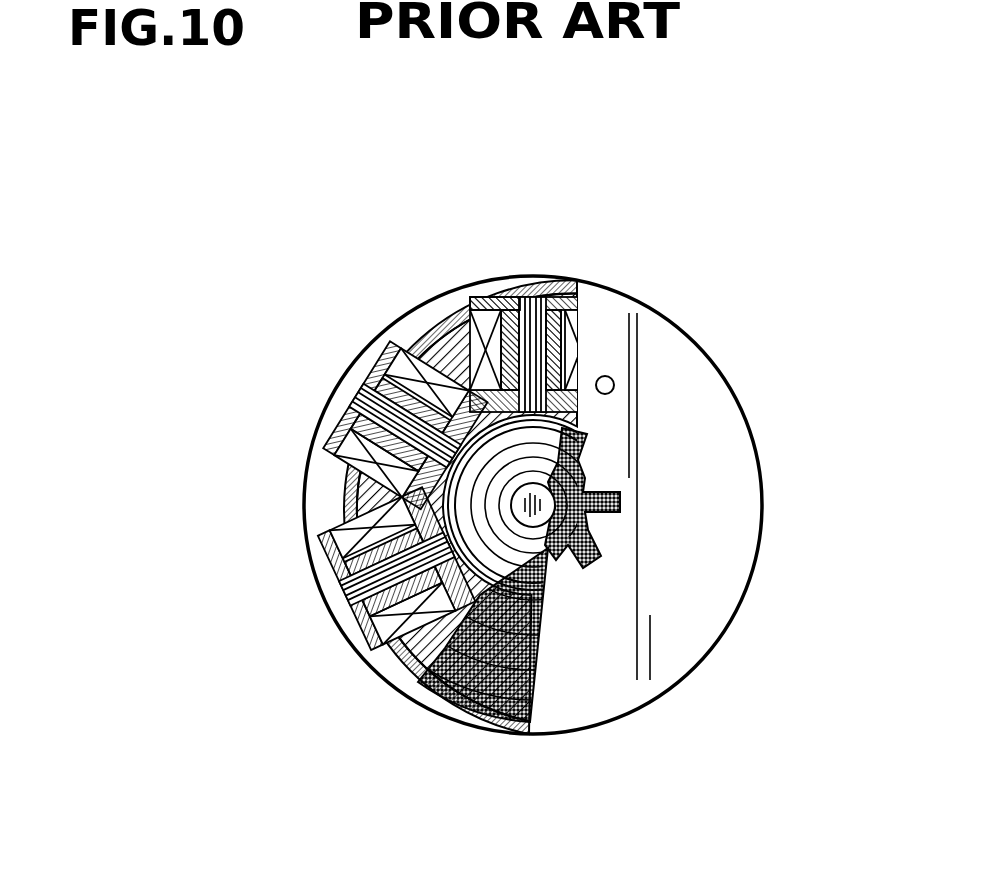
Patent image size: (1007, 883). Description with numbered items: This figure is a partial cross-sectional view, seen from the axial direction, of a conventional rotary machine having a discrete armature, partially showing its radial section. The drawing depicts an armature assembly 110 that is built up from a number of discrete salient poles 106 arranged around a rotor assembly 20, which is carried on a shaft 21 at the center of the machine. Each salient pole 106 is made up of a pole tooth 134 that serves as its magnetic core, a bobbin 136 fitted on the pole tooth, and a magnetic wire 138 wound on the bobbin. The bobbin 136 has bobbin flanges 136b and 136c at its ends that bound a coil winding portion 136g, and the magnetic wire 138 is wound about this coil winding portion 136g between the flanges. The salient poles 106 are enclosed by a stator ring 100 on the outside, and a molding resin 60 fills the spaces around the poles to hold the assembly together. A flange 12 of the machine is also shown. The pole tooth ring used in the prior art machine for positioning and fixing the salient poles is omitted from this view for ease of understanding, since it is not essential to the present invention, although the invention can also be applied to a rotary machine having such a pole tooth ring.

The armature assembly 110 is at (622, 275).
The flange 12 is at (703, 472).
The rotor assembly 20 is at (490, 468).
The shaft 21 is at (580, 533).
The molding resin 60 is at (425, 352).
The stator ring 100 is at (420, 702).
The salient poles 106 is at (268, 256).
The pole teeth 134 is at (397, 425).
The bobbins 136 is at (367, 355).
The bobbin flange 136b is at (510, 285).
The bobbin flange 136c is at (517, 370).
The coil winding portions 136g is at (553, 343).
The magnetic wires 138 is at (357, 387).